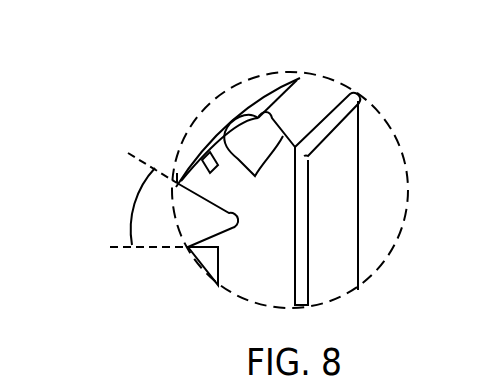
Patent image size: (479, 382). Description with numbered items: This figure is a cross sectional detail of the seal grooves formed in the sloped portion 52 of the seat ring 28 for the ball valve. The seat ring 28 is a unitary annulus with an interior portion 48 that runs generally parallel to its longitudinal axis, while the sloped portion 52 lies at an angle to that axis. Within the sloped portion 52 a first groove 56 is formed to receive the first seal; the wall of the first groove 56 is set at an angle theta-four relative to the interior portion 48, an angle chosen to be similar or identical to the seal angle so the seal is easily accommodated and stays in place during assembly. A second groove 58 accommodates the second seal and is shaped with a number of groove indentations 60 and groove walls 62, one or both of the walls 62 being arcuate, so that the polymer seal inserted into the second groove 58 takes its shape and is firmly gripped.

The seat ring 28 is at (303, 82).
The interior portion 48 is at (200, 248).
The sloped portion 52 is at (386, 237).
The first groove 56 is at (210, 183).
The second groove 58 is at (245, 146).
The groove indentations 60 is at (258, 118).
The groove walls 62 is at (259, 158).